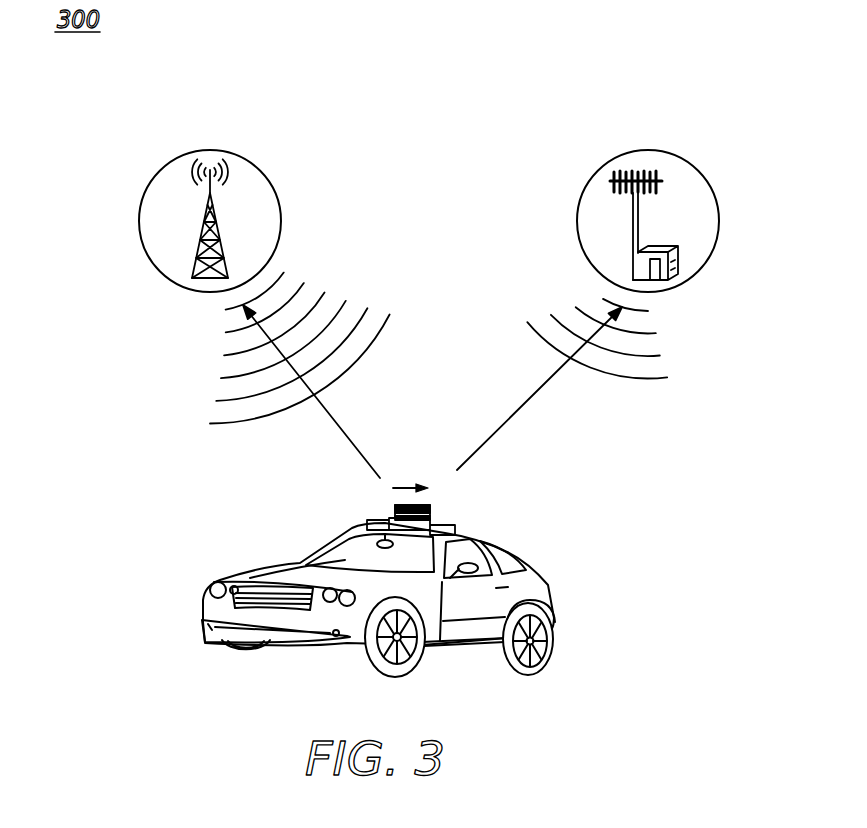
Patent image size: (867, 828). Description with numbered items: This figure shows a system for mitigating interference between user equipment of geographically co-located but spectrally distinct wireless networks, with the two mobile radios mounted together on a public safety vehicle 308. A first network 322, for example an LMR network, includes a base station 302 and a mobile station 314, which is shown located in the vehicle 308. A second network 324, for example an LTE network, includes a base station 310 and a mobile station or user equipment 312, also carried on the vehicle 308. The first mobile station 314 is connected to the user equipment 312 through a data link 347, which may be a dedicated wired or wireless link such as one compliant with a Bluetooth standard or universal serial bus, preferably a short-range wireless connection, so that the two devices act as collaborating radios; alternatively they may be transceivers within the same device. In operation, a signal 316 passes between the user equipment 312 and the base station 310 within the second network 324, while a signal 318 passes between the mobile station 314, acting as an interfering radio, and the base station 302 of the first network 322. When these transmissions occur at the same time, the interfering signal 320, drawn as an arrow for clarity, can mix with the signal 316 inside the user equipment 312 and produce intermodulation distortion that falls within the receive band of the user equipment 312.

The base station 302 is at (264, 172).
The public safety vehicle 308 is at (243, 565).
The base station 310 is at (702, 170).
The mobile station (user equipment) 312 is at (432, 510).
The mobile station 314 is at (397, 506).
The signal 316 is at (545, 385).
The signal 318 is at (323, 415).
The interfering signal 320 is at (402, 484).
The first network 322 is at (238, 132).
The second network 324 is at (620, 137).
The data link 347 is at (429, 505).